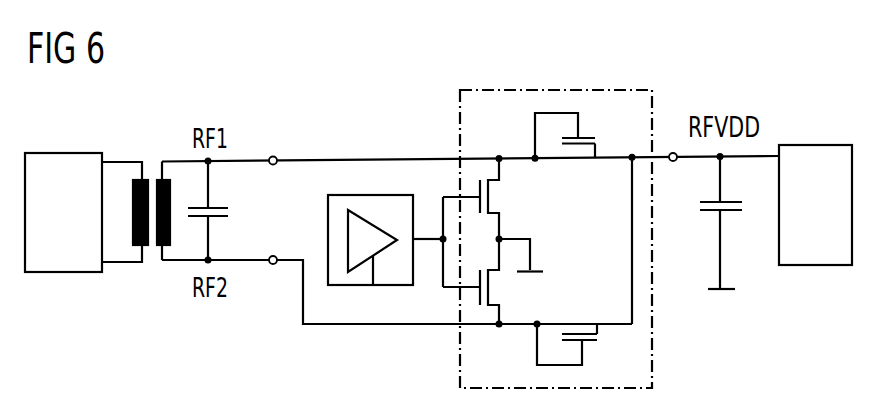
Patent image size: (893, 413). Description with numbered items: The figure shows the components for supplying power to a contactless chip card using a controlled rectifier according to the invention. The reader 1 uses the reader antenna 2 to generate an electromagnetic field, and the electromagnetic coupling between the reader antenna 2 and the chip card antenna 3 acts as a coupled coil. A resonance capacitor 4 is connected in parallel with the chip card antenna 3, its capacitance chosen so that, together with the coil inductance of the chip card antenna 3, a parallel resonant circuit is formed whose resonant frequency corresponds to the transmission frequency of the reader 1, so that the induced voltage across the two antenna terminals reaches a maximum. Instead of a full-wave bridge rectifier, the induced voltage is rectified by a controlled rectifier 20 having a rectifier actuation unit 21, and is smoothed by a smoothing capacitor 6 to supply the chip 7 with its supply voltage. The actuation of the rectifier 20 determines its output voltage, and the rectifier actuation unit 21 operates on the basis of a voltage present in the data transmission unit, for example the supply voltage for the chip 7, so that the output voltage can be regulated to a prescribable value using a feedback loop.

The reader 1 is at (62, 153).
The reader antenna 2 is at (125, 197).
The chip card antenna 3 is at (166, 196).
The resonance capacitor 4 is at (230, 212).
The smoothing capacitor 6 is at (734, 212).
The chip 7 is at (818, 145).
The controlled rectifier 20 is at (547, 90).
The rectifier actuation unit 21 is at (328, 210).